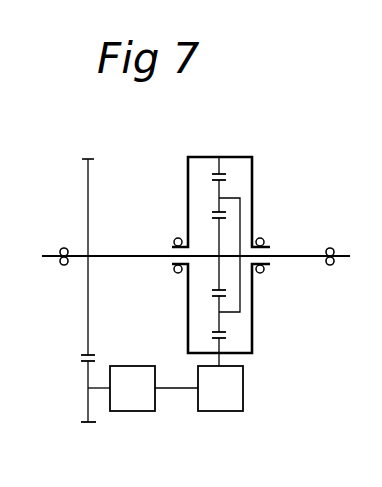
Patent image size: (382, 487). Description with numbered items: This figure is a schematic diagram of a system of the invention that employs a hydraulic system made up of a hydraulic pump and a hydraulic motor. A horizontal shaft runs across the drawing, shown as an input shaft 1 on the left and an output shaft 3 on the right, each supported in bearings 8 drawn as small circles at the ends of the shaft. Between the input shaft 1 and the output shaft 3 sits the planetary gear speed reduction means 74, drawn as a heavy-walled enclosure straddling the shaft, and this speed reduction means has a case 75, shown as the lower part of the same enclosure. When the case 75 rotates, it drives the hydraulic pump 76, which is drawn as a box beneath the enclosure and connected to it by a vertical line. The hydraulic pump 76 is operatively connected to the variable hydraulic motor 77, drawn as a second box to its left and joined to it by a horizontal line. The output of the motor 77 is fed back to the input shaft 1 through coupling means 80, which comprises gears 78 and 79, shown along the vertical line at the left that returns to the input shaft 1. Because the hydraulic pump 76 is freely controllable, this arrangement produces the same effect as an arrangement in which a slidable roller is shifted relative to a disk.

The input shaft 1 is at (118, 256).
The output shaft 3 is at (301, 257).
The bearings 8 is at (197, 256).
The planetary gear speed reduction means 74 is at (256, 196).
The case 75 is at (253, 323).
The hydraulic pump 76 is at (219, 405).
The variable hydraulic motor 77 is at (135, 405).
The gear 78 is at (88, 302).
The gear 79 is at (87, 401).
The coupling means 80 is at (78, 363).